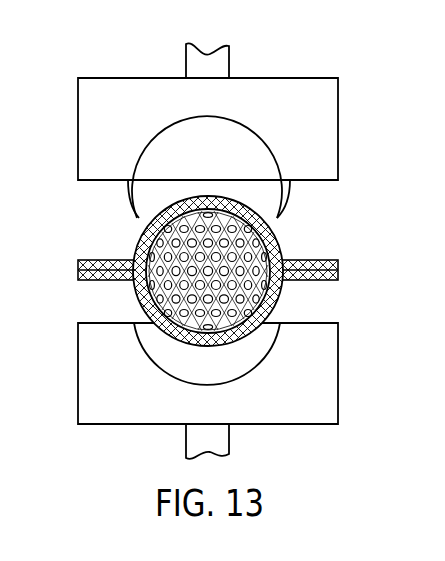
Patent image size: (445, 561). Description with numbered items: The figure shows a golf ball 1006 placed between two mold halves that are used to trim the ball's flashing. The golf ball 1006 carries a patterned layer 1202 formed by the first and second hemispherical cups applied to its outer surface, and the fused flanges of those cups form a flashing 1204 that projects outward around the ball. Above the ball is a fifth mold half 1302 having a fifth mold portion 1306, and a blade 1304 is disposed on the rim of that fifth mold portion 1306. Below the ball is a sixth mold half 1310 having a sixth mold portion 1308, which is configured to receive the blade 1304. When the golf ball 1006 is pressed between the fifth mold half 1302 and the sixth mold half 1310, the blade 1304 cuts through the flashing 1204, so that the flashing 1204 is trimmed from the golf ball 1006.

The golf ball 1006 is at (150, 240).
The patterned layer 1202 is at (140, 283).
The flashing 1204 is at (338, 264).
The fifth mold half 1302 is at (330, 98).
The blade 1304 is at (290, 197).
The fifth mold portion 1306 is at (158, 133).
The sixth mold portion 1308 is at (157, 367).
The sixth mold half 1310 is at (328, 395).